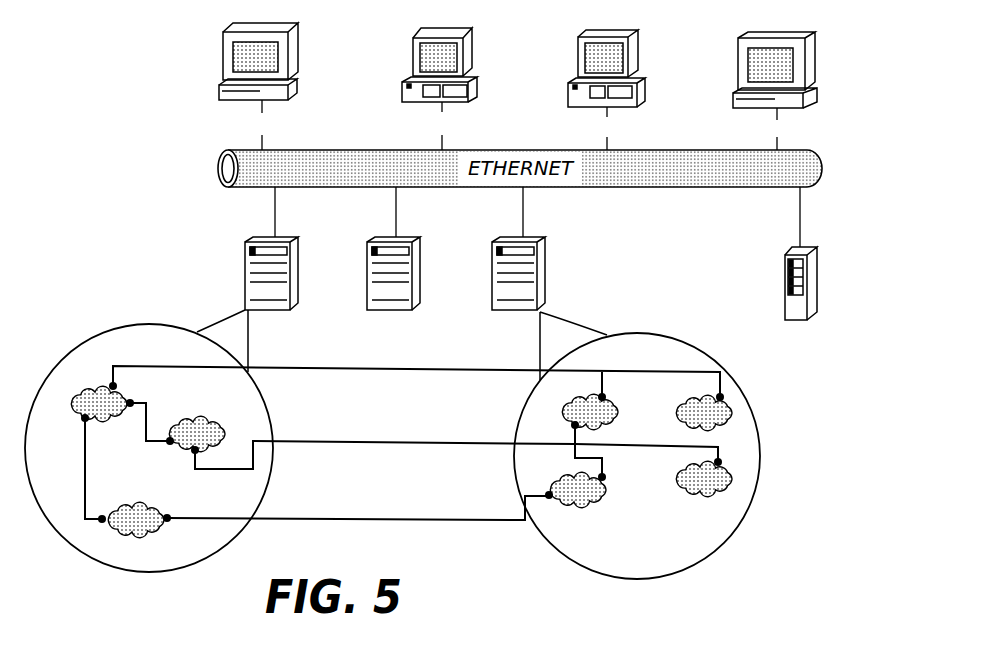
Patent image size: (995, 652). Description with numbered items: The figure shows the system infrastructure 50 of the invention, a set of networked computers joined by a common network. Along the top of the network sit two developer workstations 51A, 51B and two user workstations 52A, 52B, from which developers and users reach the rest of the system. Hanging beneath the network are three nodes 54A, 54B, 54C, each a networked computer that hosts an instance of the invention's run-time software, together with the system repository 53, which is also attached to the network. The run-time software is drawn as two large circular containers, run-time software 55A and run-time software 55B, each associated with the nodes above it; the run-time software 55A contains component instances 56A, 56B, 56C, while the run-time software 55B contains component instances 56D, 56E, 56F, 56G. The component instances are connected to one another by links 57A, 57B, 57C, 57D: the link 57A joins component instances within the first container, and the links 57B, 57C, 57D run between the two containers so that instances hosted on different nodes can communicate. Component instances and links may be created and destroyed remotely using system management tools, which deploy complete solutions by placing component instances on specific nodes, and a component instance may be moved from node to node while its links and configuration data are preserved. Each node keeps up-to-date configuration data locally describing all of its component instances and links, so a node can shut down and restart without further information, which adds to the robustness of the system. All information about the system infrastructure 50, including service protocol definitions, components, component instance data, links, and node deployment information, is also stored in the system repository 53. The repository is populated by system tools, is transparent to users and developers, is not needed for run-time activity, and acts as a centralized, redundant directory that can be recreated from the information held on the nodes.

The system infrastructure 50 is at (150, 158).
The developer workstation 51A is at (297, 54).
The developer workstation 51B is at (738, 68).
The user workstation 52A is at (470, 57).
The user workstation 52B is at (647, 88).
The system repository 53 is at (785, 280).
The node 54A is at (297, 268).
The node 54B is at (418, 272).
The node 54C is at (545, 273).
The run-time software 55A is at (113, 327).
The run-time software 55B is at (647, 333).
The component instance 56A is at (93, 388).
The component instance 56B is at (133, 507).
The component instance 56C is at (230, 430).
The component instance 56D is at (562, 408).
The component instance 56E is at (580, 503).
The component instance 56F is at (730, 415).
The component instance 56G is at (717, 490).
The link 57A is at (83, 470).
The link 57B is at (383, 368).
The link 57C is at (383, 442).
The link 57D is at (325, 517).